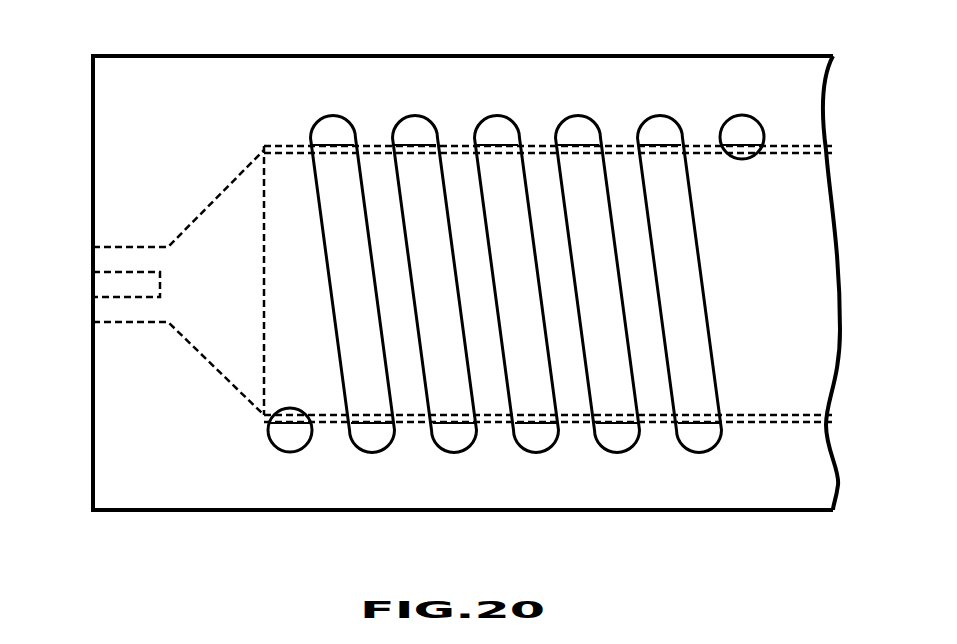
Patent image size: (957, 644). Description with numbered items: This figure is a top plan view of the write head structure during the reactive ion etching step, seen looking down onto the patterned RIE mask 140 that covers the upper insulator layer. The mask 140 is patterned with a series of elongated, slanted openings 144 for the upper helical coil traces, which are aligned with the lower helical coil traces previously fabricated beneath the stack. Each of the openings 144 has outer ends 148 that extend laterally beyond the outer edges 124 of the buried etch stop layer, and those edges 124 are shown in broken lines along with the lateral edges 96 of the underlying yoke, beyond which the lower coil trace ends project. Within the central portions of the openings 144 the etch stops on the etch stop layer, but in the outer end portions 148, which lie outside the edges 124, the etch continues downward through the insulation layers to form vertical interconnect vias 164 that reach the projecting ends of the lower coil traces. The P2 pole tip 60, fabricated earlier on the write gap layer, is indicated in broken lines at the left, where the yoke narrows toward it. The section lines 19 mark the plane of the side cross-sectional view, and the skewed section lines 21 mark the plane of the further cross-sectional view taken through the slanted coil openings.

The RIE mask 140 is at (103, 148).
The P2 pole tip 60 is at (100, 300).
The section lines 19— 19 is at (885, 425).
The skewed section lines 21— 21 is at (392, 550).
The vertical interconnect vias 164 is at (318, 132).
The outer ends of the openings 148 is at (578, 124).
The outer edges of the etch stop layer 124 is at (665, 142).
The lateral edges of the yoke 96 is at (828, 118).
The openings for upper helical coil traces 144 is at (596, 206).